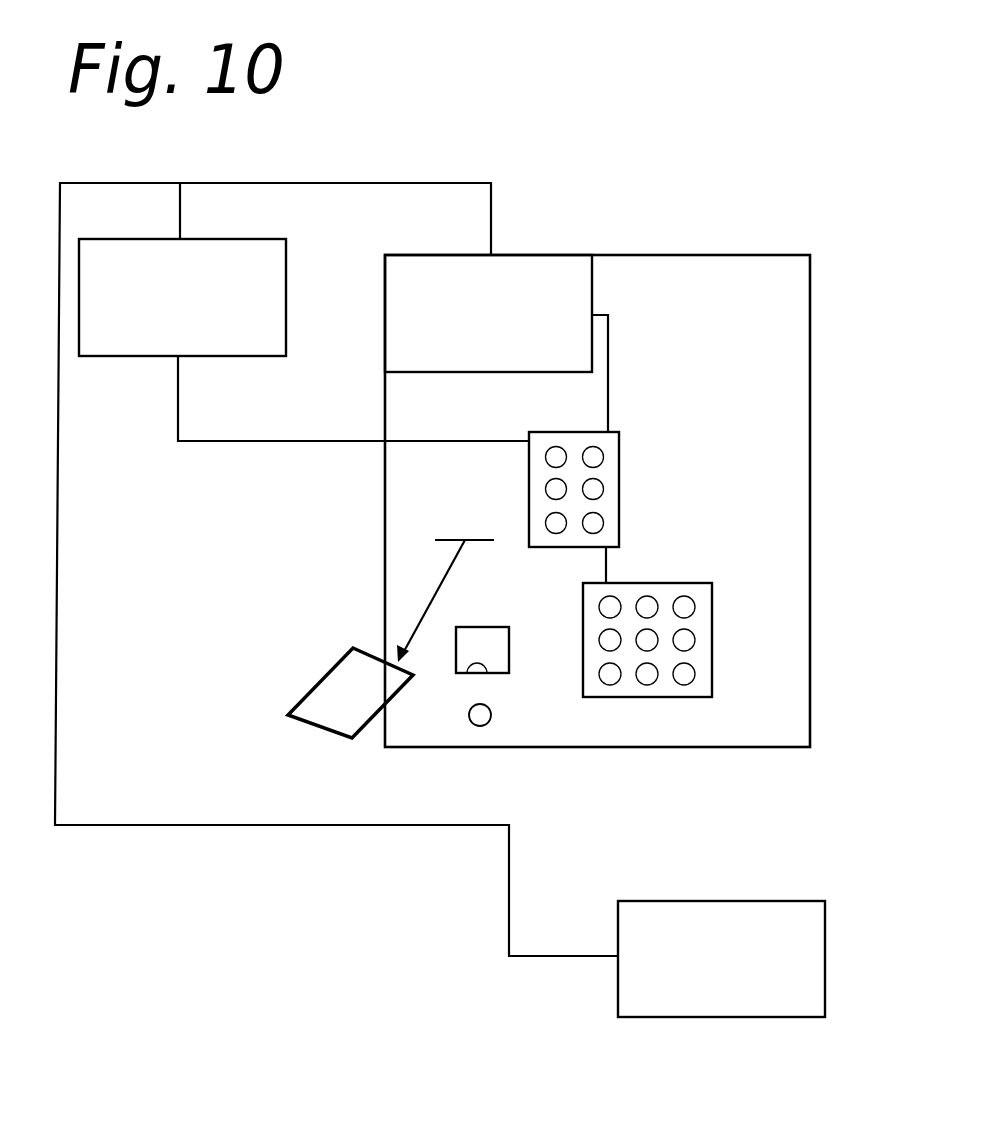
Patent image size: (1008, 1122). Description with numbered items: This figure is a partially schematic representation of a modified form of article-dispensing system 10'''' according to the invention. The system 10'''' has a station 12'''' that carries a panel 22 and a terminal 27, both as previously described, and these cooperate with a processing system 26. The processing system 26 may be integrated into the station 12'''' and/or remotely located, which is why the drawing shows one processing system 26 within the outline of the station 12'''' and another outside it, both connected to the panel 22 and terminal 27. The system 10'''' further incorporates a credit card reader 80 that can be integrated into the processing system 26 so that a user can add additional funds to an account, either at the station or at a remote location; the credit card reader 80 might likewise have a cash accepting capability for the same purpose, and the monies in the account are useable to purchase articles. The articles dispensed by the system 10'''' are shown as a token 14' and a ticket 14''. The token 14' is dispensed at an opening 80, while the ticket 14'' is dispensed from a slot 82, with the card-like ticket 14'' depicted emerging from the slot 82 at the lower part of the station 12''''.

The system 10'''' is at (483, 564).
The station 12'''' is at (648, 501).
The processing system 26 is at (162, 336).
The panel 22 is at (619, 482).
The terminal 27 is at (712, 633).
The slot 82 is at (448, 540).
The ticket 14'' is at (340, 725).
The token 14' is at (466, 756).
The credit card reader 80 is at (703, 998).